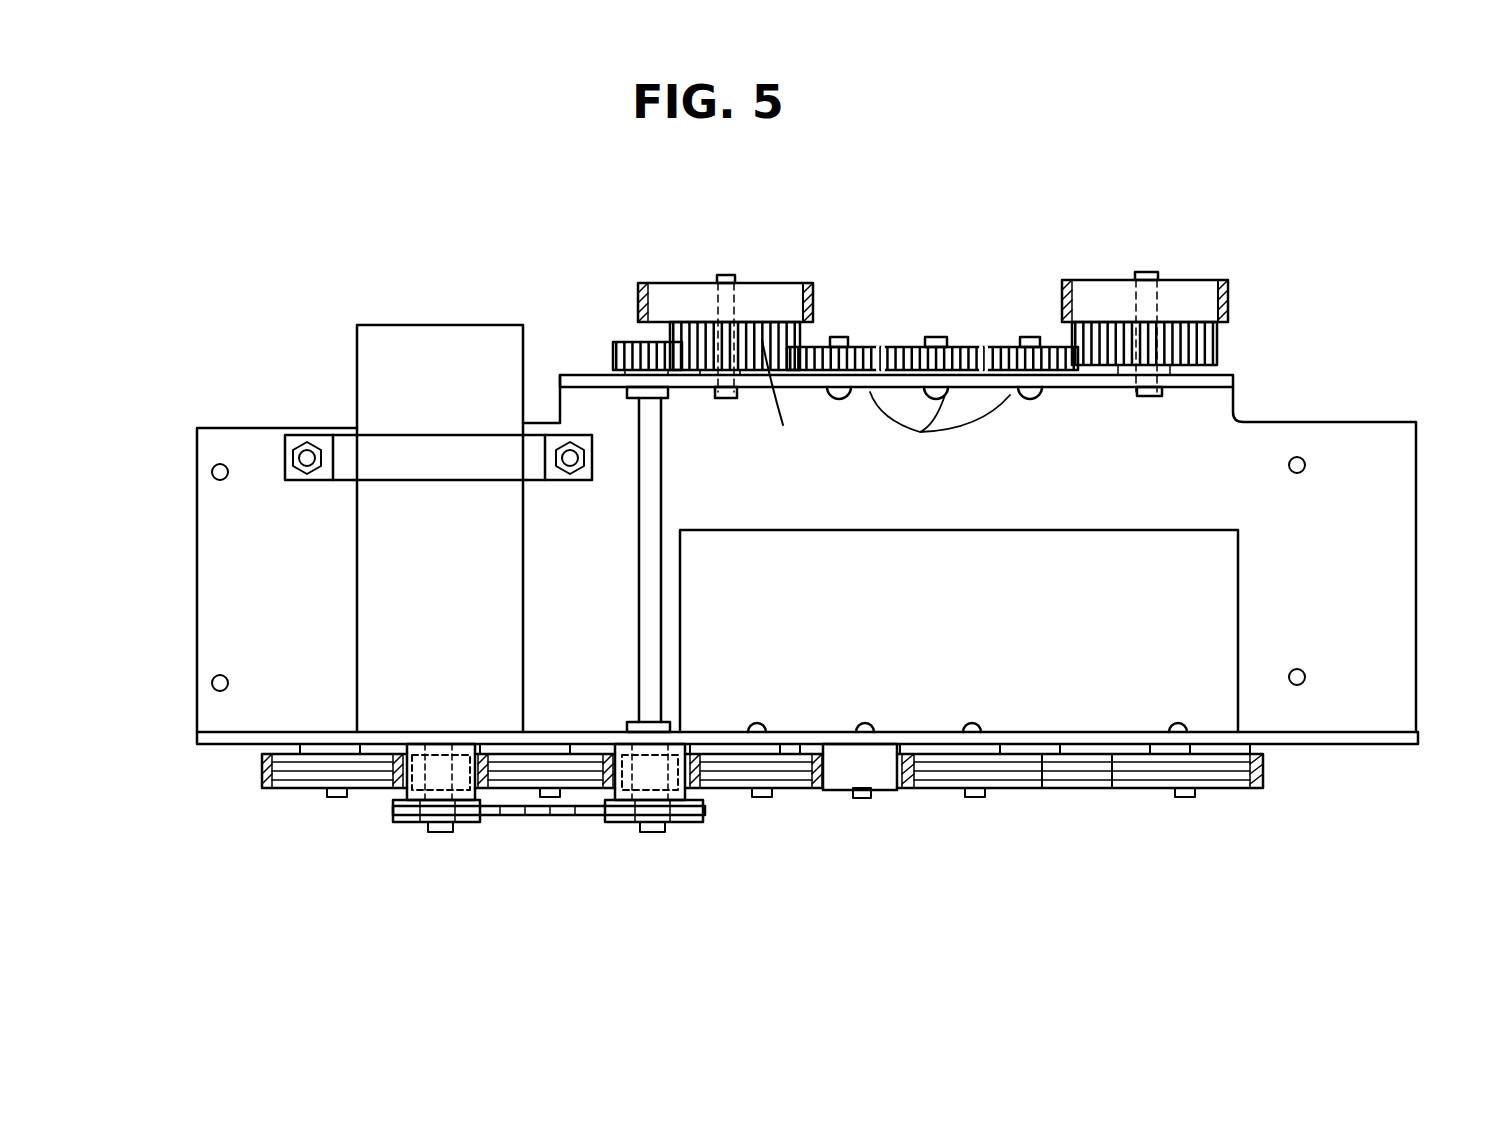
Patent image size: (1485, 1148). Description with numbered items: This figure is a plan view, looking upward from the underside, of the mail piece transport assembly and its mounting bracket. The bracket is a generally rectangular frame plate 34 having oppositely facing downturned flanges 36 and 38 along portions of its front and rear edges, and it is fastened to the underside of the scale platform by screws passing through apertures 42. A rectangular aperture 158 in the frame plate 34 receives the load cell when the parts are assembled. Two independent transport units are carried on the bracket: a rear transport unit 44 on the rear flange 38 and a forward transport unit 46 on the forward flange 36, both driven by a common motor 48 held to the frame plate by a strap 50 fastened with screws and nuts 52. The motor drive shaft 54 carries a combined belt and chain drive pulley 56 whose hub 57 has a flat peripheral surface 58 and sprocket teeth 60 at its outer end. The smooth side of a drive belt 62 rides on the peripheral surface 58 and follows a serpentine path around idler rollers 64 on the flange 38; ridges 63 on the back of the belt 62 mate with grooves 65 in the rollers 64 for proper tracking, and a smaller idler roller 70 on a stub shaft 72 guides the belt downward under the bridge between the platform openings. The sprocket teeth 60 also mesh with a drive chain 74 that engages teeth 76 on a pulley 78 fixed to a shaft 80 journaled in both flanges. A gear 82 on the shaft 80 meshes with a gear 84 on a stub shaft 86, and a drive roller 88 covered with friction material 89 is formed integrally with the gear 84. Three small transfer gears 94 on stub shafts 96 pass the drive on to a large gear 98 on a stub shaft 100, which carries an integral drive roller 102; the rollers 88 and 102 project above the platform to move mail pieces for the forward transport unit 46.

The frame plate 34 is at (1410, 548).
The forward downturned flange 36 is at (1233, 380).
The rear downturned flange 38 is at (1338, 744).
The apertures 42 is at (1306, 470).
The rear transport unit 44 is at (212, 477).
The forward transport unit 46 is at (985, 233).
The motor 48 is at (357, 592).
The strap 50 is at (467, 468).
The screws and nuts 52 is at (315, 478).
The drive shaft 54 is at (438, 832).
The combined belt and chain drive pulley 56 is at (470, 702).
The hub 57 is at (408, 748).
The flat peripheral surface 58 is at (428, 748).
The sprocket teeth 60 is at (398, 822).
The drive belt 62 is at (268, 782).
The ridges 63 is at (280, 795).
The idler rollers 64 is at (310, 797).
The grooves 65 is at (295, 755).
The smaller idler roller 70 is at (842, 800).
The stub shaft 72 is at (865, 800).
The drive chain 74 is at (560, 815).
The teeth 76 is at (677, 832).
The pulley 78 is at (683, 750).
The shaft 80 is at (660, 465).
The gear 82 is at (613, 350).
The gear 84 is at (786, 393).
The stub shaft 86 is at (727, 275).
The drive roller 88 is at (672, 283).
The friction material 89 is at (810, 283).
The transfer gears 94 is at (934, 424).
The stub shafts 96 is at (1030, 338).
The gear 98 is at (1220, 350).
The stub shaft 100 is at (1138, 272).
The drive roller 102 is at (1190, 280).
The rectangular aperture 158 is at (1062, 532).